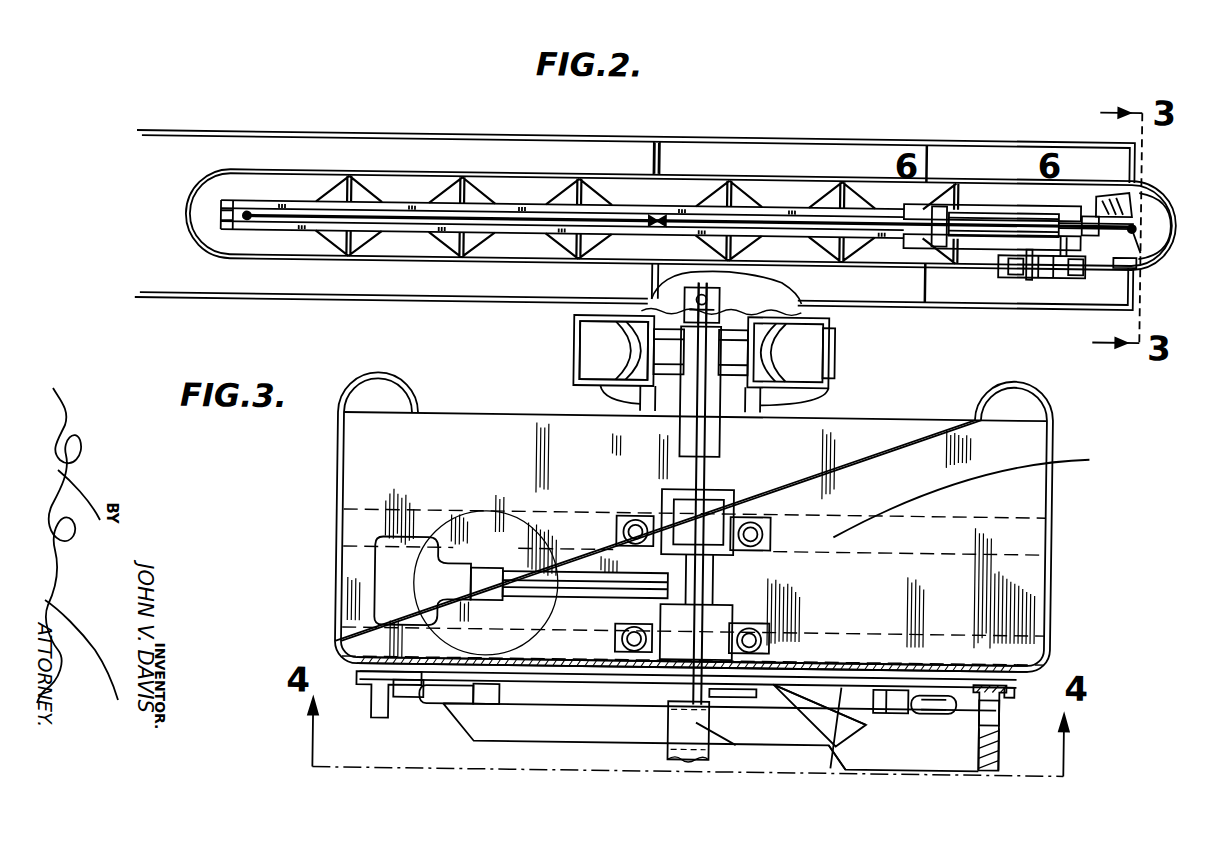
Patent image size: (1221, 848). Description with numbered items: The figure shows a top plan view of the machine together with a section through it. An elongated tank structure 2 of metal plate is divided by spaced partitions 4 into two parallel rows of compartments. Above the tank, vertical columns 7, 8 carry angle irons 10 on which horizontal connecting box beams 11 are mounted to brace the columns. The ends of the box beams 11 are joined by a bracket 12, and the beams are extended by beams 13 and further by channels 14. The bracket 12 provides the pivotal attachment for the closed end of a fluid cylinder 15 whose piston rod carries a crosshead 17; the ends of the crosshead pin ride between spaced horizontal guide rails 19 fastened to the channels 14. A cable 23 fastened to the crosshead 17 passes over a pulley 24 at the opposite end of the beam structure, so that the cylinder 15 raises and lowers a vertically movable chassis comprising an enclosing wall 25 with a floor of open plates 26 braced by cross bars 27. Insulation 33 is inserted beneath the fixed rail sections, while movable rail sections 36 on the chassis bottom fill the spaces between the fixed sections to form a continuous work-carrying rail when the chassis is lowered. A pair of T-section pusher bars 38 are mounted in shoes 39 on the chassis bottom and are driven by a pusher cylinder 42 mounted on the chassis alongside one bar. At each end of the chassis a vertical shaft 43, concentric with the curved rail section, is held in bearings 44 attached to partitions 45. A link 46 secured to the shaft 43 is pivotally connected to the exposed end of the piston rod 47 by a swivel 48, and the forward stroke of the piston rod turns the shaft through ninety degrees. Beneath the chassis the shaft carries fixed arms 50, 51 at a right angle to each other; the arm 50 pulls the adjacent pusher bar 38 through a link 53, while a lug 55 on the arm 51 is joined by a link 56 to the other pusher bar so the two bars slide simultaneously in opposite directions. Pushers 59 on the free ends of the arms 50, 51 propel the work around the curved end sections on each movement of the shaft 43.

In FIG. 2, the tank structure 2 is at (262, 129).
In FIG. 2, the partitions 4 is at (661, 143).
In FIG. 2, the vertical column 7 is at (221, 214).
In FIG. 2, the vertical column 8 is at (662, 219).
In FIG. 3, the angle irons 10 is at (612, 393).
In FIG. 2, the box beams 11 is at (975, 193).
In FIG. 3, the box beams 11 is at (573, 338).
In FIG. 2, the bracket 12 is at (937, 203).
In FIG. 2, the beams 13 is at (1094, 203).
In FIG. 3, the channels 14 is at (828, 363).
In FIG. 2, the fluid cylinder 15 is at (990, 208).
In FIG. 3, the fluid cylinder 15 is at (557, 369).
In FIG. 3, the crosshead 17 is at (706, 310).
In FIG. 2, the guide rails 19 is at (1068, 250).
In FIG. 3, the guide rails 19 is at (657, 326).
In FIG. 2, the cable 23 is at (421, 210).
In FIG. 2, the pulley 24 is at (251, 210).
In FIG. 2, the enclosing wall 25 is at (502, 164).
In FIG. 3, the enclosing wall 25 is at (345, 475).
In FIG. 3, the open plates 26 is at (553, 660).
In FIG. 2, the cross bars 27 is at (372, 182).
In FIG. 3, the insulation 33 is at (827, 714).
In FIG. 3, the movable rail sections 36 is at (1005, 752).
In FIG. 3, the pusher bars 38 is at (392, 717).
In FIG. 3, the shoes 39 is at (1022, 684).
In FIG. 2, the pusher cylinder 42 is at (1048, 250).
In FIG. 3, the pusher cylinder 42 is at (440, 574).
In FIG. 2, the vertical shaft 43 is at (1137, 216).
In FIG. 3, the vertical shaft 43 is at (720, 472).
In FIG. 3, the bearings 44 is at (735, 515).
In FIG. 3, the partitions 45 is at (976, 496).
In FIG. 2, the link 46 is at (1140, 238).
In FIG. 3, the link 46 is at (572, 590).
In FIG. 2, the piston rod 47 is at (1095, 252).
In FIG. 3, the swivel 48 is at (473, 585).
In FIG. 3, the arm 50 is at (535, 685).
In FIG. 3, the arm 51 is at (713, 687).
In FIG. 3, the link 53 is at (450, 702).
In FIG. 2, the lug 55 is at (1168, 186).
In FIG. 3, the lug 55 is at (847, 676).
In FIG. 2, the link 56 is at (1120, 183).
In FIG. 3, the link 56 is at (915, 707).
In FIG. 3, the pushers 59 is at (680, 710).